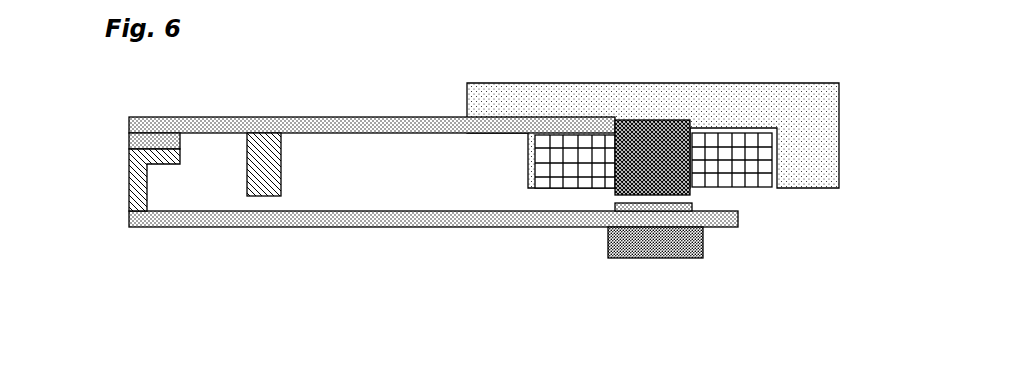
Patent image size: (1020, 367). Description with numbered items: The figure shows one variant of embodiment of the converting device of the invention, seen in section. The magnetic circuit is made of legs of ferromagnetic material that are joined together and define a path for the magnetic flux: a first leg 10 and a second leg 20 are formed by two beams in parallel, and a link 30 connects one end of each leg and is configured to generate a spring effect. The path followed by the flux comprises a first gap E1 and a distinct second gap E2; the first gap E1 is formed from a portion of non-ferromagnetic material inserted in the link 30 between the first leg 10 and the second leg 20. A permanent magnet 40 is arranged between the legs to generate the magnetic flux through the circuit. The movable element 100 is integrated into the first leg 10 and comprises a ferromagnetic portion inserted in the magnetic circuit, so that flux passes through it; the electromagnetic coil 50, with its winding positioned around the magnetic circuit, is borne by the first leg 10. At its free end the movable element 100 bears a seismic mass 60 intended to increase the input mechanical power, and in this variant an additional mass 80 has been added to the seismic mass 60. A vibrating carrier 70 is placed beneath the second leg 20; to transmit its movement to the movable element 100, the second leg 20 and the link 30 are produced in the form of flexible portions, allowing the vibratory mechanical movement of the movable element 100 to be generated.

The movable element 100 is at (447, 117).
The first leg 10 is at (367, 128).
The second leg 20 is at (378, 218).
The link 30 is at (137, 175).
The permanent magnet 40 is at (270, 168).
The electromagnetic coil 50 is at (550, 135).
The seismic mass 60 is at (650, 120).
The vibrating carrier 70 is at (645, 247).
The additional mass 80 is at (693, 92).
The first gap E1 is at (138, 142).
The second gap E2 is at (677, 200).